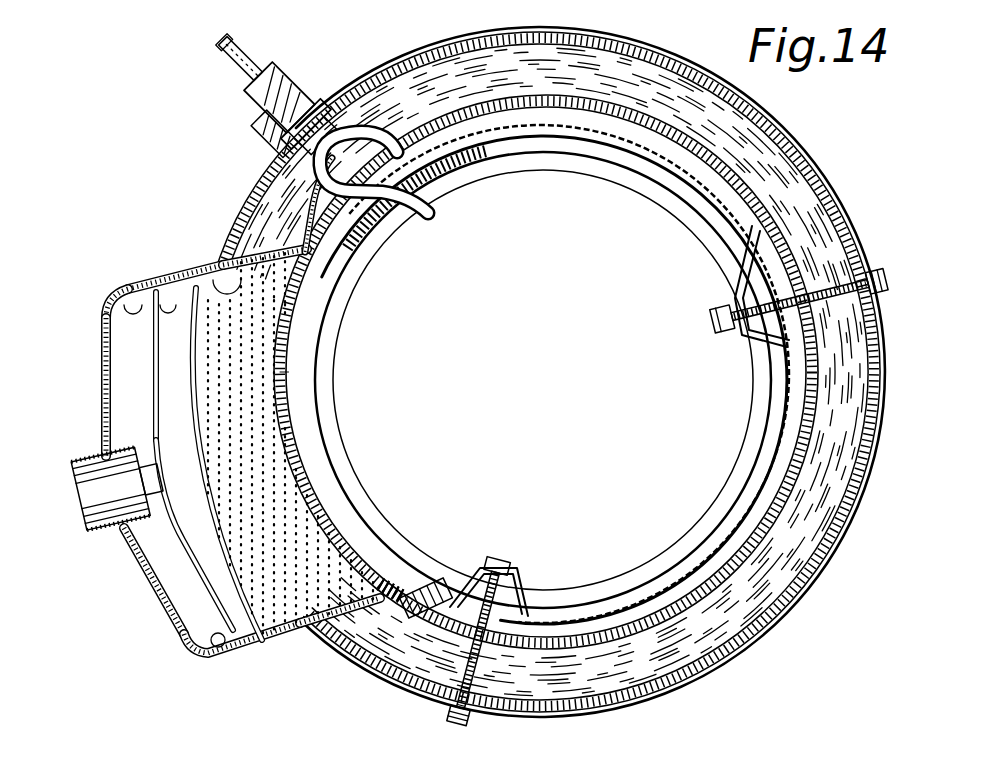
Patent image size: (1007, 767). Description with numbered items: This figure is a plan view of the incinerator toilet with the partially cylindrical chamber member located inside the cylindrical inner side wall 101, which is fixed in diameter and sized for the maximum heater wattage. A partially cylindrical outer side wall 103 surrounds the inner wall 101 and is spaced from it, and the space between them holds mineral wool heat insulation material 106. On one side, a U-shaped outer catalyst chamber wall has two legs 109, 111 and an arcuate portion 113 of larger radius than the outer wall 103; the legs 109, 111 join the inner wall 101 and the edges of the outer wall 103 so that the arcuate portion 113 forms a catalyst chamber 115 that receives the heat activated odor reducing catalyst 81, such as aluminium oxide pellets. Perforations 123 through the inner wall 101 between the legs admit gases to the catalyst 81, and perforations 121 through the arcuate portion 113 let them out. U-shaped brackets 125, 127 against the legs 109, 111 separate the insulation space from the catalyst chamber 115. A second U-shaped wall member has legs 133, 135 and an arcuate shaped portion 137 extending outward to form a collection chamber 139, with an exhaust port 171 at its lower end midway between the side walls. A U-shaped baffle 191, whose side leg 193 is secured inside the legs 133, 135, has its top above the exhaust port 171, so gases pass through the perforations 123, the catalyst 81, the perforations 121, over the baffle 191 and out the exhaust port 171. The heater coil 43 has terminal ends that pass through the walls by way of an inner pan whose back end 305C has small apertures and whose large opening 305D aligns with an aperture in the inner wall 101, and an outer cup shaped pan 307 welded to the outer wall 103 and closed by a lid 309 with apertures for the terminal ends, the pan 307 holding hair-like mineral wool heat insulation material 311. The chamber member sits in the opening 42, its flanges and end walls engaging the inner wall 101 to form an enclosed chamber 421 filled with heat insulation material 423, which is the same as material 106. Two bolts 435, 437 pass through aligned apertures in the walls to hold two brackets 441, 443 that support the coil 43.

The opening 42 is at (486, 453).
The heater coil 43 is at (562, 158).
The heat activated odor reducing catalyst 81 is at (300, 632).
The inner side wall 101 is at (790, 450).
The outer side wall 103 is at (775, 625).
The heat insulation material 106 is at (695, 647).
The leg of U-shaped outer catalyst chamber side wall 109 is at (222, 275).
The leg of U-shaped outer catalyst chamber side wall 111 is at (375, 572).
The arcuate portion 113 is at (190, 628).
The catalyst chamber 115 is at (190, 268).
The perforations 121 is at (114, 434).
The perforations 123 is at (283, 378).
The U-shaped bracket 125 is at (262, 250).
The U-shaped bracket 127 is at (352, 578).
The leg of second U-shaped wall member 133 is at (110, 297).
The leg of second U-shaped wall member 135 is at (220, 660).
The arcuate shaped portion 137 is at (158, 580).
The collection chamber 139 is at (130, 402).
The exhaust port 171 is at (114, 532).
The U-shaped baffle 191 is at (147, 373).
The side leg of baffle 193 is at (156, 325).
The back end of inner pan 305C is at (350, 205).
The large opening of inner pan 305D is at (398, 170).
The outer cup shaped pan 307 is at (325, 95).
The lid 309 is at (292, 85).
The heat insulation material 311 is at (262, 140).
The enclosed chamber 421 is at (748, 230).
The heat insulation material 423 is at (755, 508).
The bolt 435 is at (452, 712).
The bolt 437 is at (882, 270).
The bracket 441 is at (748, 345).
The bracket 443 is at (518, 572).